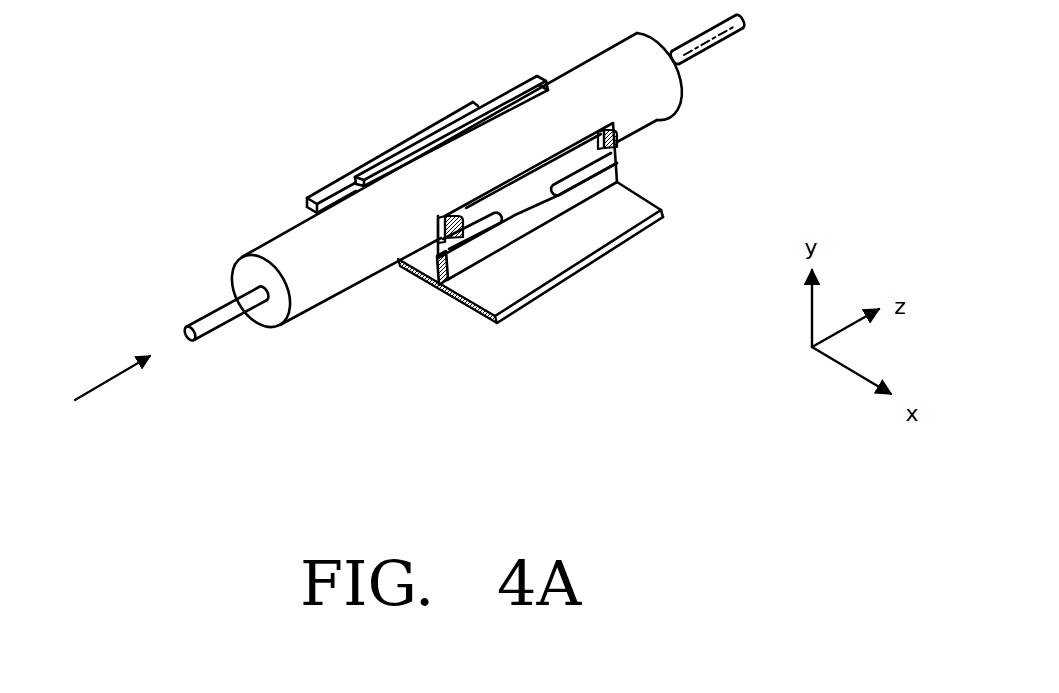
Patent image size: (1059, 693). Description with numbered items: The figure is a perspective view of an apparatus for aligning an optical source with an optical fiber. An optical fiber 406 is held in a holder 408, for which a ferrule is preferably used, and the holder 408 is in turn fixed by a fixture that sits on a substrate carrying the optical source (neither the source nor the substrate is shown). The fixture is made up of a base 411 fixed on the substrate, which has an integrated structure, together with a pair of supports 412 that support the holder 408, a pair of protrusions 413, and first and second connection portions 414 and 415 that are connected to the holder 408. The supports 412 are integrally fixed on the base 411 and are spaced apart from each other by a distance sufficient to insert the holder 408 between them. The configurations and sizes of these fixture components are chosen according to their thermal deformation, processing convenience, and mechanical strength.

The optical fiber 406 is at (193, 321).
The holder 408 is at (277, 328).
The base 411 is at (318, 200).
The support 412 is at (619, 177).
The protrusion 413 is at (560, 163).
The first connection portion 414 is at (452, 214).
The second connection portion 415 is at (619, 139).